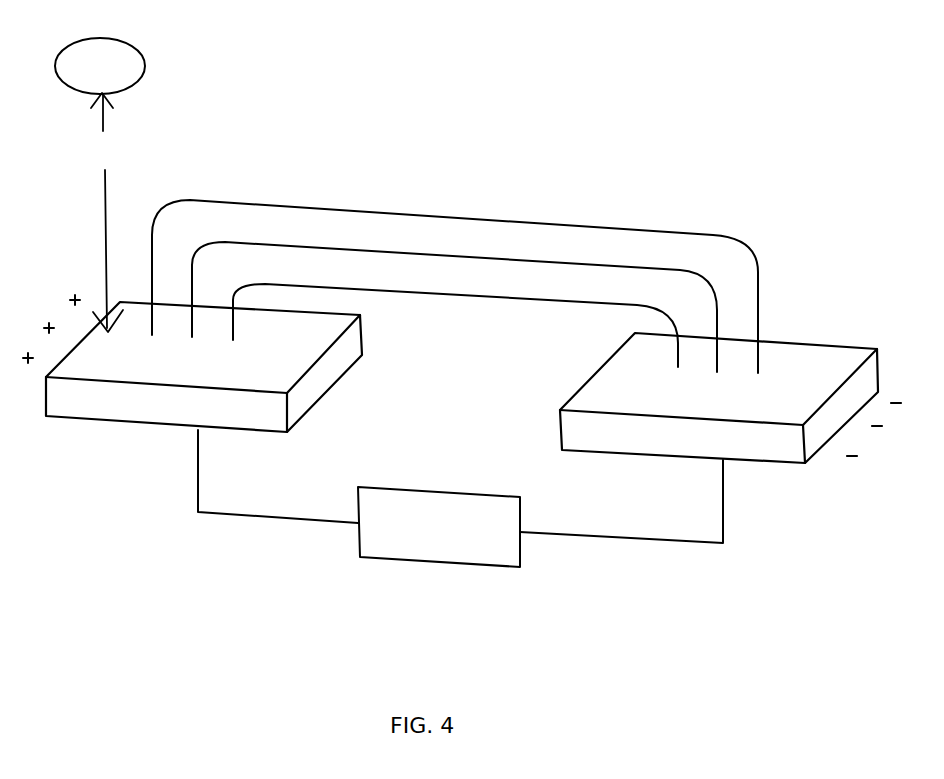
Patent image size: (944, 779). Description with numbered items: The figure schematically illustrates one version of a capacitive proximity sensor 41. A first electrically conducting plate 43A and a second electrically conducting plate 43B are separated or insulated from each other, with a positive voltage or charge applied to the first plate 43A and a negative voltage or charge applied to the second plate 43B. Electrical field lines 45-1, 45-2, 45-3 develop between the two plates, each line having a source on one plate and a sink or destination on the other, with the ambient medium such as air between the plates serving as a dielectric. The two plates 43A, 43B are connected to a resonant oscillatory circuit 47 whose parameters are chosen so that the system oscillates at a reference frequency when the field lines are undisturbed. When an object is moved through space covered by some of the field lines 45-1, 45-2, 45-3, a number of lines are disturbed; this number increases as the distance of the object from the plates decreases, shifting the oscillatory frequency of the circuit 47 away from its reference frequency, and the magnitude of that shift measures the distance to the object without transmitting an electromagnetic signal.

The capacitive proximity sensor 41 is at (718, 118).
The first electrically conducting plate 43A is at (102, 402).
The second electrically conducting plate 43B is at (753, 443).
The electrical field line 45-1 is at (493, 295).
The electrical field line 45-2 is at (478, 258).
The electrical field line 45-3 is at (467, 217).
The resonant oscillatory circuit 47 is at (457, 555).